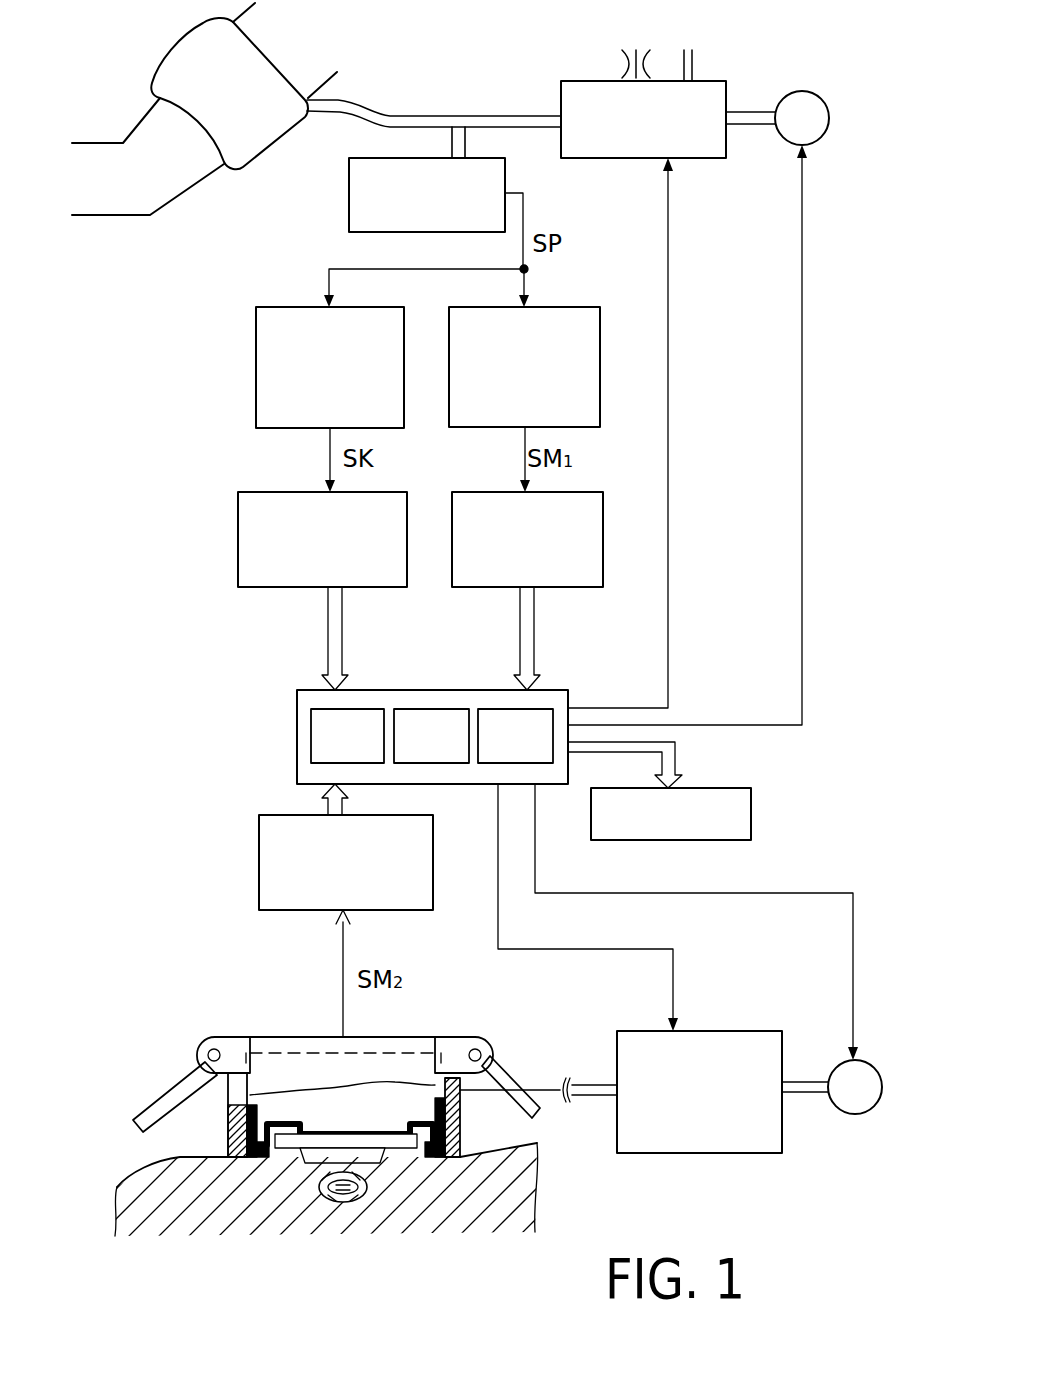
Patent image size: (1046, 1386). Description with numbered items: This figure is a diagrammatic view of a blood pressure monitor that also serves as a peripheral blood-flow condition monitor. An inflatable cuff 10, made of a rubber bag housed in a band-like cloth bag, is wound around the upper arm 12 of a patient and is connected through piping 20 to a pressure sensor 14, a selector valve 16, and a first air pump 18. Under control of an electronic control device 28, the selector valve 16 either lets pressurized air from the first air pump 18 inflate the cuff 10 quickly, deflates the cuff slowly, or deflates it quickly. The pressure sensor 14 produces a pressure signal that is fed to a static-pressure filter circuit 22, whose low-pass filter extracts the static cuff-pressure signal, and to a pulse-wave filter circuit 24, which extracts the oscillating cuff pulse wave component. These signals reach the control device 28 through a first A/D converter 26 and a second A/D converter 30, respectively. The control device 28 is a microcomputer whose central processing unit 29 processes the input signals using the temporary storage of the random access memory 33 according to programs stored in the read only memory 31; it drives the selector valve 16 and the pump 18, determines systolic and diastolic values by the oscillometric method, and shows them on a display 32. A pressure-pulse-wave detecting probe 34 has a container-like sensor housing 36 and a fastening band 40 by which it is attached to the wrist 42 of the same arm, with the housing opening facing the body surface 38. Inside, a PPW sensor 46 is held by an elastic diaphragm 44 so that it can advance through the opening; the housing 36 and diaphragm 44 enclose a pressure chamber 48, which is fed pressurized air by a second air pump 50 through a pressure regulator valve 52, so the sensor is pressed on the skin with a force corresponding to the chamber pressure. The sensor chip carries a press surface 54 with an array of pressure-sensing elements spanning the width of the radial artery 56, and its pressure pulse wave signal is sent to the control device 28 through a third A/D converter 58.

The inflatable cuff 10 is at (183, 68).
The upper arm 12 is at (190, 166).
The pressure sensor 14 is at (349, 203).
The selector valve 16 is at (718, 90).
The first air pump 18 is at (786, 138).
The piping 20 is at (410, 116).
The static-pressure filter circuit 22 is at (305, 306).
The pulse-wave filter circuit 24 is at (560, 306).
The first A/D converter 26 is at (238, 540).
The electronic control device 28 is at (409, 706).
The central processing unit 29 is at (318, 729).
The second A/D converter 30 is at (603, 545).
The read only memory 31 is at (440, 712).
The display 32 is at (748, 816).
The random access memory 33 is at (548, 712).
The pressure-pulse-wave detecting probe 34 is at (224, 1025).
The sensor housing 36 is at (228, 1128).
The body surface 38 is at (150, 1160).
The fastening band 40 is at (170, 1095).
The wrist 42 is at (329, 1192).
The elastic diaphragm 44 is at (327, 1196).
The PPW sensor 46 is at (305, 1172).
The pressure chamber 48 is at (352, 1115).
The second air pump 50 is at (856, 1110).
The pressure regulator valve 52 is at (714, 1152).
The press surface 54 is at (370, 1165).
The radial artery 56 is at (343, 1205).
The third A/D converter 58 is at (262, 852).